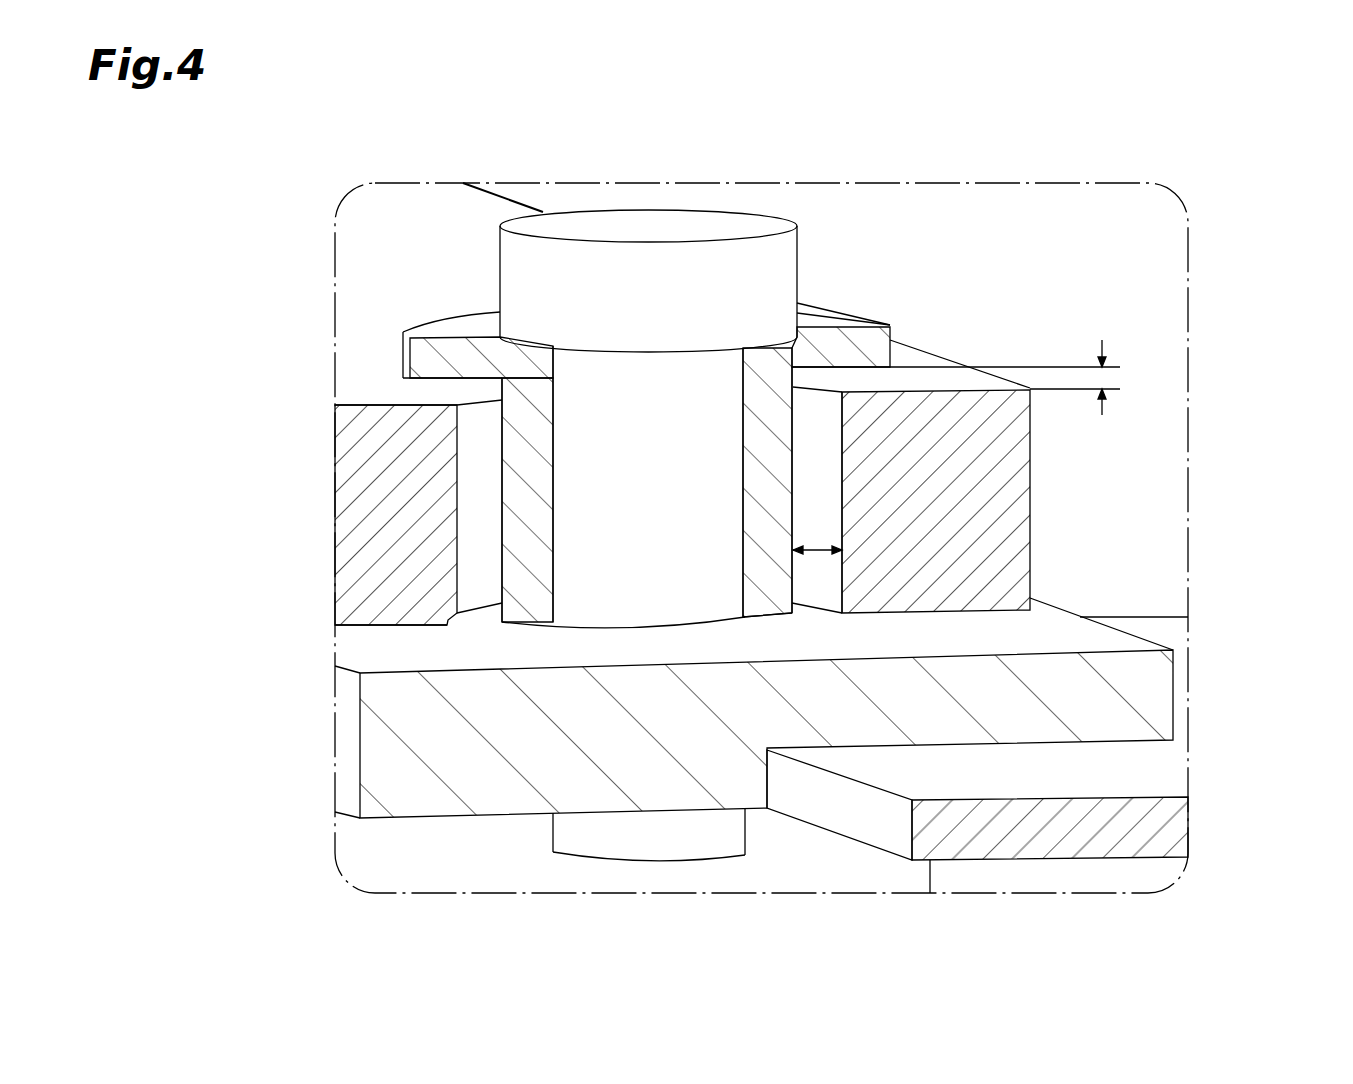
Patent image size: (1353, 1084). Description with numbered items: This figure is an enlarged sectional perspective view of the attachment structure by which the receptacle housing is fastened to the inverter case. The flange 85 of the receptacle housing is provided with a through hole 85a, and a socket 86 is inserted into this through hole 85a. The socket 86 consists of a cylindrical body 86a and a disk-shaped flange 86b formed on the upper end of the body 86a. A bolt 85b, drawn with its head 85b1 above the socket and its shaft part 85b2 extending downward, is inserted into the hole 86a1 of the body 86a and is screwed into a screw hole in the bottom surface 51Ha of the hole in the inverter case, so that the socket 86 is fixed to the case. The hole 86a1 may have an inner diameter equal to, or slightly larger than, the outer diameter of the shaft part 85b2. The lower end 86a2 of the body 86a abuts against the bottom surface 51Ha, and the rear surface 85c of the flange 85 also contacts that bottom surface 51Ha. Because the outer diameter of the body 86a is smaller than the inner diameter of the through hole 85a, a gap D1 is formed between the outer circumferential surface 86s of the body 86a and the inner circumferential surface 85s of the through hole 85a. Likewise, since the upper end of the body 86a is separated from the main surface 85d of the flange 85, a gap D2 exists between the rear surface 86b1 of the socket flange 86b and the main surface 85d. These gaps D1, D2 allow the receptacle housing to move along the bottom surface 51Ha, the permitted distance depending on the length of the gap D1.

The flange 85 is at (756, 543).
The through hole 85a is at (458, 404).
The bolt 85b is at (648, 543).
The pin head 85b1 is at (647, 209).
The shaft part 85b2 is at (647, 862).
The rear surface 85c is at (370, 632).
The main surface 85d is at (918, 350).
The inner circumferential surface 85s is at (846, 480).
The socket 86 is at (750, 403).
The cylindrical body 86a is at (750, 514).
The hole 86a1 is at (552, 508).
The lower end 86a2 is at (530, 628).
The disk-shaped flange 86b is at (665, 251).
The rear surface 86b1 is at (833, 376).
The outer circumferential surface 86s is at (795, 458).
The bottom surface 51Ha is at (1061, 633).
The gap D1 is at (818, 548).
The gap D2 is at (1108, 378).